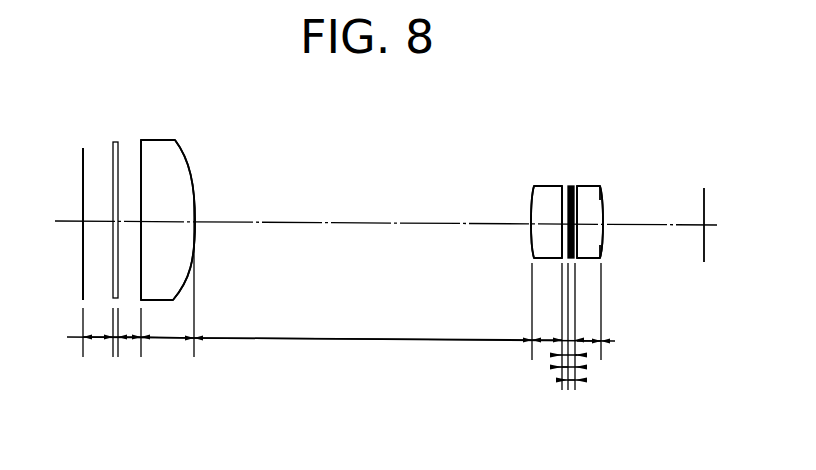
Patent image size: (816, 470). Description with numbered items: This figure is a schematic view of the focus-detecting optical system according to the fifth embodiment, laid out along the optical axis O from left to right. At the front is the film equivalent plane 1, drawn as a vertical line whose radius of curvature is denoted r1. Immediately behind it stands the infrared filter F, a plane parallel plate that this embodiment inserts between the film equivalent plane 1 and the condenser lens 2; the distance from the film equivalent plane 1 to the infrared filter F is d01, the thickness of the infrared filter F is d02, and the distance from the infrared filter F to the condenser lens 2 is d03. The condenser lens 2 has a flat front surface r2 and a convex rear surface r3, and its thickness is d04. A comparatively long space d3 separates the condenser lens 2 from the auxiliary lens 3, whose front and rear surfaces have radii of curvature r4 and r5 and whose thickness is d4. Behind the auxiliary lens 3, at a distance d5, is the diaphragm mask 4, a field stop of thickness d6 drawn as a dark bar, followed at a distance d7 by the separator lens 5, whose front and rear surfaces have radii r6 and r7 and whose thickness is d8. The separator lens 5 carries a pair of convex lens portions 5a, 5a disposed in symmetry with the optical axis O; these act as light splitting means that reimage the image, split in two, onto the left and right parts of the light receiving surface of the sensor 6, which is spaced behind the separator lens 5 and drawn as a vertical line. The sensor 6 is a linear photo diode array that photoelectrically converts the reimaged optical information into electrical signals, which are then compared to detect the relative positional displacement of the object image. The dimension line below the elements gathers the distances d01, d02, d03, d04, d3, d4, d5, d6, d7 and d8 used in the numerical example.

The film equivalent plane 1 is at (83, 168).
The infrared filter F is at (112, 140).
The condenser lens 2 is at (160, 141).
The auxiliary lens 3 is at (547, 192).
The diaphragm mask 4 is at (570, 185).
The separator lens 5 is at (592, 190).
The convex lens portions 5a is at (597, 202).
The sensor 6 is at (706, 198).
The optical axis O is at (304, 221).
The radius of curvature of the film equivalent plane r1 is at (83, 150).
The front surface of the condenser lens r2 is at (142, 150).
The rear surface of the condenser lens r3 is at (182, 150).
The radius of curvature of the front surface of the auxiliary lens r4 is at (532, 197).
The radius of curvature of the rear surface of the auxiliary lens r5 is at (560, 205).
The radius of curvature of the front surface of the separator lens r6 is at (578, 193).
The radius of curvature of the rear surface of the separator lens r7 is at (602, 192).
The distance from the film equivalent plane to the infrared filter d01 is at (97, 340).
The thickness of the infrared filter d02 is at (113, 343).
The distance from the infrared filter to the condenser lens d03 is at (127, 343).
The thickness of the condenser lens d04 is at (168, 342).
The distance between the condenser lens and the auxiliary lens d3 is at (355, 342).
The thickness of the auxiliary lens d4 is at (545, 345).
The distance between the auxiliary lens and the diaphragm mask d5 is at (565, 370).
The thickness of the diaphragm mask d6 is at (572, 383).
The distance between the diaphragm mask and the separator lens d7 is at (575, 358).
The thickness of the separator lens d8 is at (577, 360).